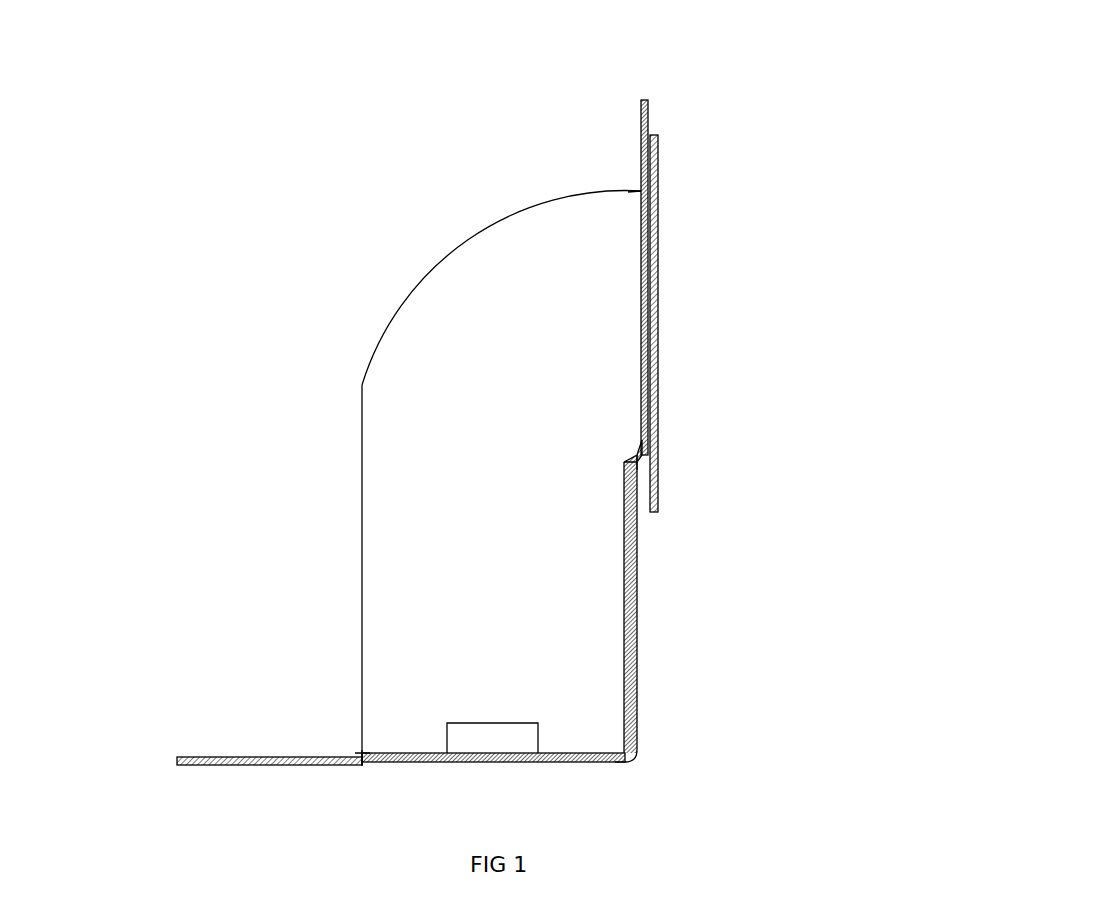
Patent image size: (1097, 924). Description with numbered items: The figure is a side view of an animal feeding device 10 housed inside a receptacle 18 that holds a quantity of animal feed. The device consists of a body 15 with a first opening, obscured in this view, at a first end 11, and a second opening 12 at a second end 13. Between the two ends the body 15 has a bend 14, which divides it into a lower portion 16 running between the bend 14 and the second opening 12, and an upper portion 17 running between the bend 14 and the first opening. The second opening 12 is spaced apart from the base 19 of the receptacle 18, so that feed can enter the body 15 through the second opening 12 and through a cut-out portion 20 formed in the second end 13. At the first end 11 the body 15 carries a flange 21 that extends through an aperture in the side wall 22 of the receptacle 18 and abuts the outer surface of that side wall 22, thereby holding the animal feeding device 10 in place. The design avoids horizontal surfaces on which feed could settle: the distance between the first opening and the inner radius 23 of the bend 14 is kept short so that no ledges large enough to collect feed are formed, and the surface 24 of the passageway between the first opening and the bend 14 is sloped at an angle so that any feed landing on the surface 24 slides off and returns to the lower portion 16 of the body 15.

The animal feeding device 10 is at (344, 410).
The first end 11 is at (631, 214).
The second opening 12 is at (447, 764).
The second end 13 is at (358, 766).
The bend 14 is at (428, 283).
The body 15 is at (353, 444).
The lower portion 16 is at (558, 657).
The upper portion 17 is at (606, 278).
The receptacle 18 is at (267, 669).
The base 19 is at (621, 773).
The cut-out portion 20 is at (519, 741).
The flange 21 is at (668, 154).
The side wall 22 is at (653, 102).
The inner radius 23 is at (638, 434).
The surface 24 is at (649, 460).